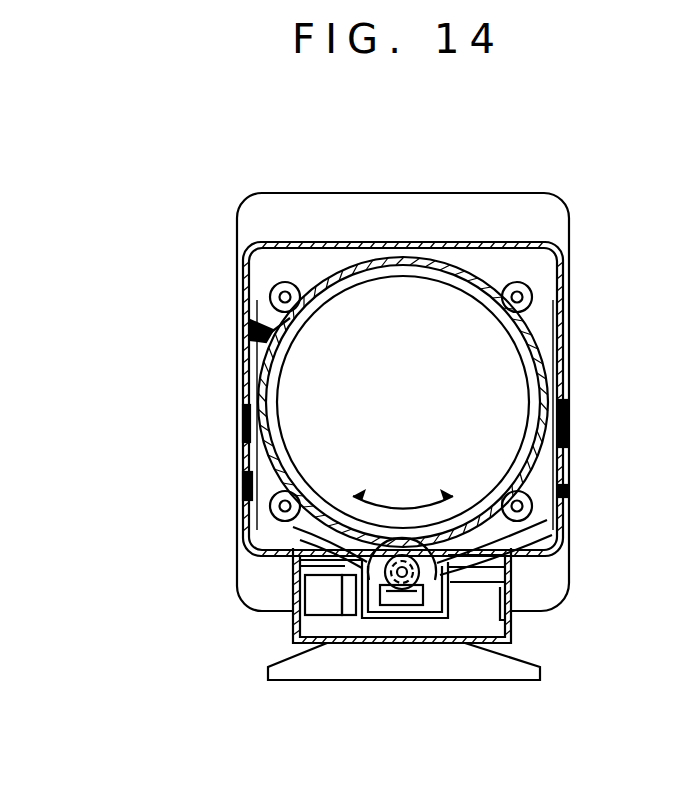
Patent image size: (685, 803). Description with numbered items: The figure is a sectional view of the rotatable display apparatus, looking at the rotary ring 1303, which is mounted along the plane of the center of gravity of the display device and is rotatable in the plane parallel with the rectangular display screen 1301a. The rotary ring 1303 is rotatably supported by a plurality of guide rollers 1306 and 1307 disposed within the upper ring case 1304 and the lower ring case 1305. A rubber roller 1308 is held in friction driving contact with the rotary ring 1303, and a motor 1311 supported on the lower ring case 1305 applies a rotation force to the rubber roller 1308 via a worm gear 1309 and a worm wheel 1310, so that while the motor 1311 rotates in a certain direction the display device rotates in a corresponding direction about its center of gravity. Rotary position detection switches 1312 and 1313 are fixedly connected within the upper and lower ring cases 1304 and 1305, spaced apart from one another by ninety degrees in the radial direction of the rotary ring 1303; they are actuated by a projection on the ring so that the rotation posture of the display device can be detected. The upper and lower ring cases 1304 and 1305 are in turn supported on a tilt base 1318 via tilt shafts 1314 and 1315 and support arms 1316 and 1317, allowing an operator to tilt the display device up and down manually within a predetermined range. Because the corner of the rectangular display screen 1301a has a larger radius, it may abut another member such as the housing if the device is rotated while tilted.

The rectangular display screen 1301a is at (310, 210).
The rotary ring 1303 is at (452, 280).
The upper ring case 1304 is at (238, 263).
The lower ring case 1305 is at (238, 500).
The guide roller 1306 is at (270, 296).
The guide roller 1307 is at (238, 478).
The rubber roller 1308 is at (572, 513).
The worm gear 1309 is at (410, 595).
The worm wheel 1310 is at (568, 581).
The motor 1311 is at (290, 598).
The rotary position detection switch 1312 is at (258, 336).
The rotary position detection switch 1313 is at (315, 593).
The tilt shaft 1314 is at (568, 447).
The tilt shaft 1315 is at (240, 443).
The support arm 1316 is at (570, 493).
The support arm 1317 is at (237, 527).
The tilt base 1318 is at (330, 663).